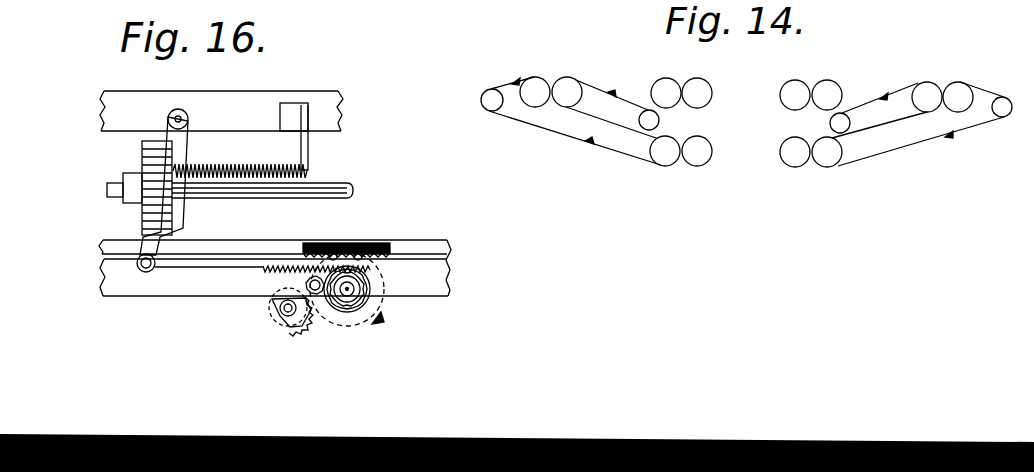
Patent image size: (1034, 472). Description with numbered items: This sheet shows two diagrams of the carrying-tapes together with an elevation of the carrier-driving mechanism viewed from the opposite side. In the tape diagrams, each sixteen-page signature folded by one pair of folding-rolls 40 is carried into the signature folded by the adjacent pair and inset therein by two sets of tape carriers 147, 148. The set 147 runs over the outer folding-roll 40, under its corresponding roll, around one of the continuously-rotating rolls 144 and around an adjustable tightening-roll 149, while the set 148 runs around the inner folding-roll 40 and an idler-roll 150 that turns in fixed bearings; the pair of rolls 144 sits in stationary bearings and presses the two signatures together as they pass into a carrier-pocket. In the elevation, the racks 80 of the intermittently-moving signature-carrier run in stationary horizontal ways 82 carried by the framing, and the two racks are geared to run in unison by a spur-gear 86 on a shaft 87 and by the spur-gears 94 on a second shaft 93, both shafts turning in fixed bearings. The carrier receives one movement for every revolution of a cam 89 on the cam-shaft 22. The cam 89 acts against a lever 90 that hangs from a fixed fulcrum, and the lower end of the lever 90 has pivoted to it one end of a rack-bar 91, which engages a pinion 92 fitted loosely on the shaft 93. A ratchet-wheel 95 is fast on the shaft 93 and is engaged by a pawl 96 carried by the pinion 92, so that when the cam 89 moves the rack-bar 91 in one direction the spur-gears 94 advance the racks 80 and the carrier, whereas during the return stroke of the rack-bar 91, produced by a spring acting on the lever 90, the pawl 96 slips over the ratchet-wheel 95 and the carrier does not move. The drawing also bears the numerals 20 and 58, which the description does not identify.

In FIG. 16, the frame bar 20 is at (450, 281).
In FIG. 16, the cam-shaft 22 is at (353, 189).
In FIG. 14, the folding-rolls 40 is at (565, 86).
In FIG. 16, the part 58 is at (412, 9).
In FIG. 16, the racks 80 is at (368, 245).
In FIG. 16, the stationary horizontal ways 82 is at (418, 241).
In FIG. 16, the spur-gear 86 is at (275, 323).
In FIG. 16, the shaft 87 is at (280, 308).
In FIG. 16, the cam 89 is at (180, 216).
In FIG. 16, the lever 90 is at (183, 114).
In FIG. 16, the rack-bar 91 is at (280, 265).
In FIG. 16, the pinion 92 is at (367, 290).
In FIG. 16, the shaft 93 is at (350, 293).
In FIG. 16, the spur-gears 94 is at (320, 316).
In FIG. 16, the ratchet-wheel 95 is at (337, 313).
In FIG. 16, the pawl 96 is at (254, 158).
In FIG. 14, the continuously-rotating rolls 144 is at (697, 162).
In FIG. 14, the tape carriers 147 is at (573, 143).
In FIG. 14, the tape carriers 148 is at (592, 84).
In FIG. 14, the adjustable tightening-roll 149 is at (487, 105).
In FIG. 14, the idler-roll 150 is at (660, 120).